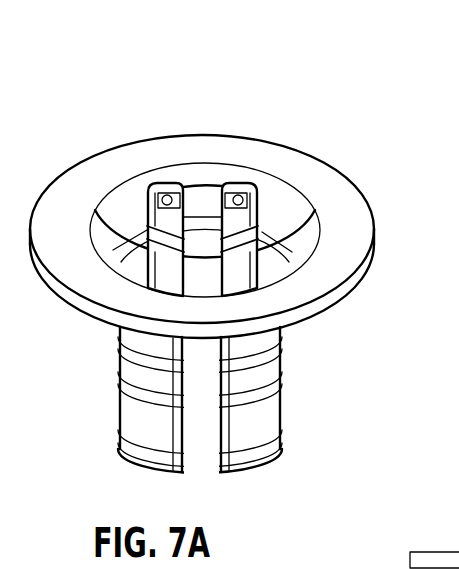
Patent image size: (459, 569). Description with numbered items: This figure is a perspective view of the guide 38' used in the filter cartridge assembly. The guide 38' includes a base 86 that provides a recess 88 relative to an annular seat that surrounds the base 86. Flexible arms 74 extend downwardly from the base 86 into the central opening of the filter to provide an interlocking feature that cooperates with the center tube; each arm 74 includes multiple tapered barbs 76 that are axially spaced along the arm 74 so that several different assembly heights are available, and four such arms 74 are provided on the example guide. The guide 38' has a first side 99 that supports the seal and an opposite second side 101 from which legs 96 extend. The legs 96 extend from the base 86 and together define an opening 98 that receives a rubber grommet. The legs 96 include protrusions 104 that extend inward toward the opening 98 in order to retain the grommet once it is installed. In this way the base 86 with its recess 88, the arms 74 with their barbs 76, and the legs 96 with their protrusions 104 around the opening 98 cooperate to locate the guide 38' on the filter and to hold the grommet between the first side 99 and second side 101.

The guide 38' is at (238, 269).
The base 86 is at (370, 212).
The recess 88 is at (125, 205).
The legs 96 is at (272, 189).
The protrusions 104 is at (177, 185).
The opening 98 is at (226, 269).
The flexible arms 74 is at (154, 421).
The tapered barbs 76 is at (118, 381).
The first side 99 is at (200, 412).
The second side 101 is at (215, 96).